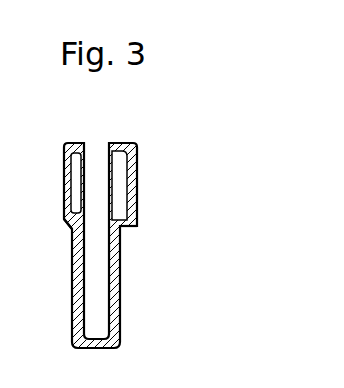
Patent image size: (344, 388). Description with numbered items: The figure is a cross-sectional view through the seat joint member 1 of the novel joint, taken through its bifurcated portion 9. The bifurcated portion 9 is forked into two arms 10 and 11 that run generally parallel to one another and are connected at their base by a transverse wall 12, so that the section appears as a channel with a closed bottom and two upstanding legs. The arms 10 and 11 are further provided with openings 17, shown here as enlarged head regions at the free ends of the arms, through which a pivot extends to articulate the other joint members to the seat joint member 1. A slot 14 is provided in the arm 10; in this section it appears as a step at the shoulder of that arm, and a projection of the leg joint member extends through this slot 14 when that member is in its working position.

The seat joint member 1 is at (141, 202).
The bifurcated portion 9 is at (62, 289).
The arm 10 is at (120, 288).
The arm 11 is at (72, 233).
The transverse wall 12 is at (98, 338).
The slot 14 is at (121, 228).
The opening 17 is at (139, 168).